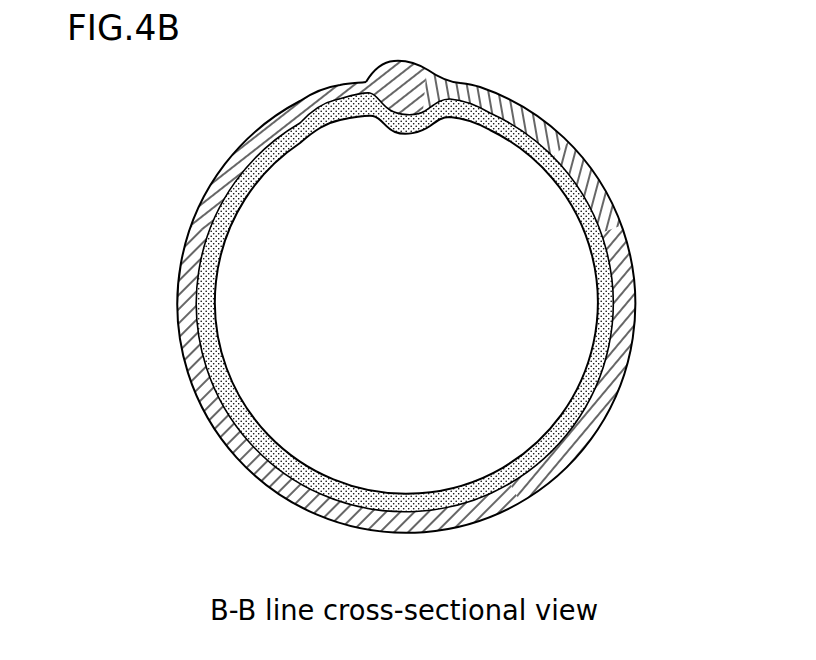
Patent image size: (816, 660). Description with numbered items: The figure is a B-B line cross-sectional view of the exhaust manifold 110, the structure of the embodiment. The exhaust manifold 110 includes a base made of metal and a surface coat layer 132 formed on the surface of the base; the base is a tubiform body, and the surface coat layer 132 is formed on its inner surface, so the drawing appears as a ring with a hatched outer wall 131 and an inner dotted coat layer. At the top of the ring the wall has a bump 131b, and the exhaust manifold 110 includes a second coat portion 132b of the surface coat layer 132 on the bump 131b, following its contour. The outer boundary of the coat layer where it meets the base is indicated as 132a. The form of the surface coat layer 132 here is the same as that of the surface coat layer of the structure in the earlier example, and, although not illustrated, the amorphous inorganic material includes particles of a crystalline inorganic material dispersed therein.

The exhaust manifold 110 is at (181, 143).
The outer layer 131 is at (617, 228).
The bump 131b is at (415, 72).
The surface coat layer 132 is at (572, 166).
The outer surface of inner layer 132a is at (530, 128).
The second coat portion 132b is at (375, 107).